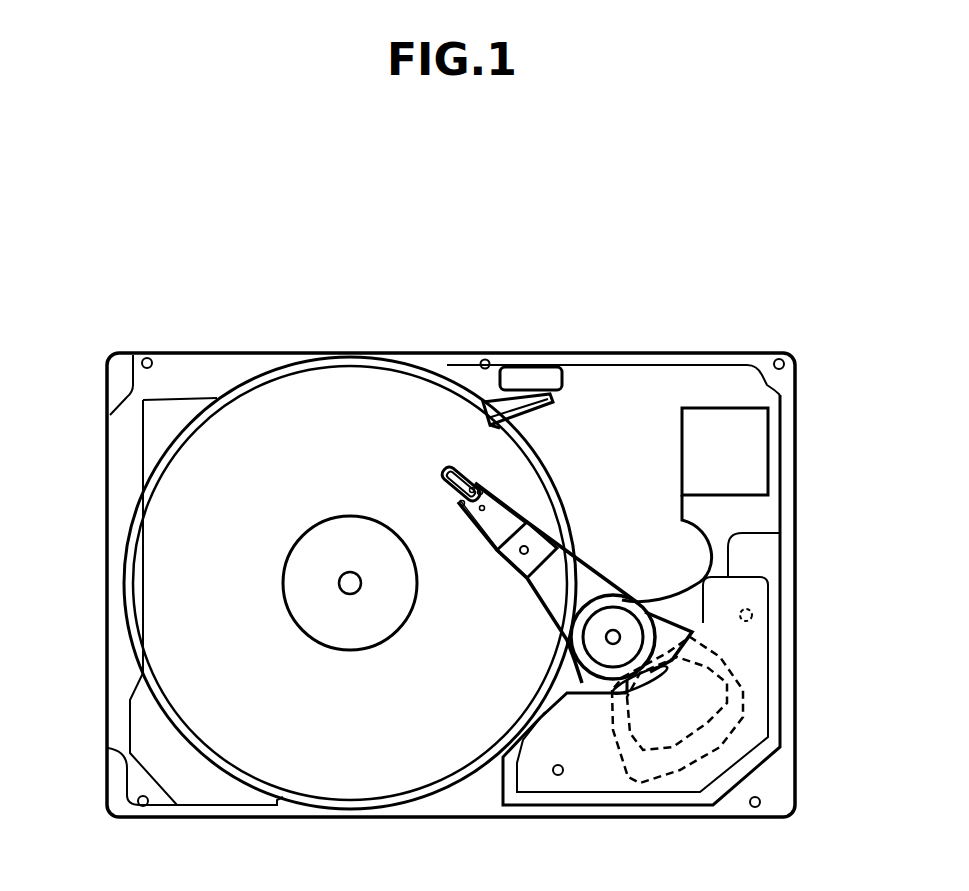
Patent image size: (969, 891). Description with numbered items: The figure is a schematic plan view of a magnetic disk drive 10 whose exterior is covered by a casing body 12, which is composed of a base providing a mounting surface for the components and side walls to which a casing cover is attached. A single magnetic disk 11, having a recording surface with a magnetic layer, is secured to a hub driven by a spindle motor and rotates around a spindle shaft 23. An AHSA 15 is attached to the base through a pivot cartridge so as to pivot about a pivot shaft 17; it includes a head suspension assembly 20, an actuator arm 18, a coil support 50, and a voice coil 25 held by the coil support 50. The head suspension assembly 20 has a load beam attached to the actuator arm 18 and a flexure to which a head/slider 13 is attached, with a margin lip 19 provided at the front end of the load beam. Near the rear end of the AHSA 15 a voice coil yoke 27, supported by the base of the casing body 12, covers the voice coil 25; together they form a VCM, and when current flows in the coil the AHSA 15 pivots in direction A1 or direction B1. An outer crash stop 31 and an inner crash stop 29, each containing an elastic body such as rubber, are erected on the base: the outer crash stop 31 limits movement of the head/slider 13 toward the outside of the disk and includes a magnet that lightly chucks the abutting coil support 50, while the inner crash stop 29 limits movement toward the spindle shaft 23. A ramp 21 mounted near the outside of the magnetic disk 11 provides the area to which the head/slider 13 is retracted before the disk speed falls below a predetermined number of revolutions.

The magnetic disk drive 10 is at (506, 297).
The magnetic disk 11 is at (160, 548).
The casing body 12 is at (677, 355).
The head/slider 13 is at (460, 475).
The AHSA 15 is at (537, 510).
The pivot shaft 17 is at (613, 635).
The actuator arm 18 is at (553, 587).
The margin lip 19 is at (445, 473).
The head suspension assembly 20 is at (495, 527).
The ramp 21 is at (557, 406).
The spindle shaft 23 is at (350, 583).
The voice coil 25 is at (742, 670).
The voice coil yoke 27 is at (770, 713).
The inner crash stop 29 is at (753, 613).
The outer crash stop 31 is at (553, 775).
The coil support 50 is at (583, 660).
The direction A1 is at (498, 455).
The direction B1 is at (437, 493).